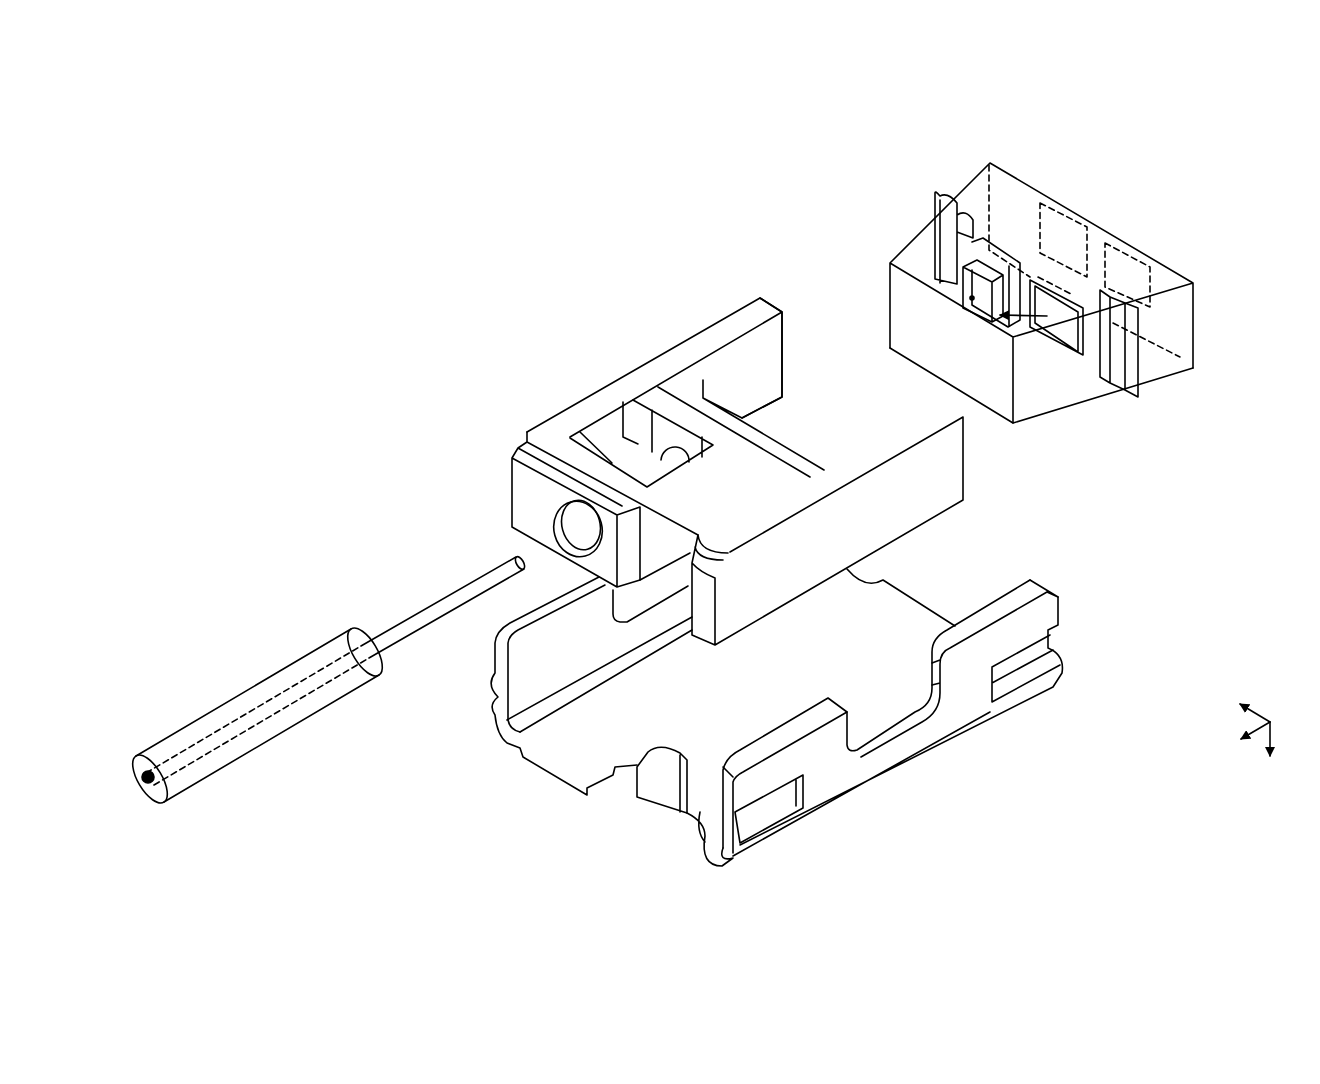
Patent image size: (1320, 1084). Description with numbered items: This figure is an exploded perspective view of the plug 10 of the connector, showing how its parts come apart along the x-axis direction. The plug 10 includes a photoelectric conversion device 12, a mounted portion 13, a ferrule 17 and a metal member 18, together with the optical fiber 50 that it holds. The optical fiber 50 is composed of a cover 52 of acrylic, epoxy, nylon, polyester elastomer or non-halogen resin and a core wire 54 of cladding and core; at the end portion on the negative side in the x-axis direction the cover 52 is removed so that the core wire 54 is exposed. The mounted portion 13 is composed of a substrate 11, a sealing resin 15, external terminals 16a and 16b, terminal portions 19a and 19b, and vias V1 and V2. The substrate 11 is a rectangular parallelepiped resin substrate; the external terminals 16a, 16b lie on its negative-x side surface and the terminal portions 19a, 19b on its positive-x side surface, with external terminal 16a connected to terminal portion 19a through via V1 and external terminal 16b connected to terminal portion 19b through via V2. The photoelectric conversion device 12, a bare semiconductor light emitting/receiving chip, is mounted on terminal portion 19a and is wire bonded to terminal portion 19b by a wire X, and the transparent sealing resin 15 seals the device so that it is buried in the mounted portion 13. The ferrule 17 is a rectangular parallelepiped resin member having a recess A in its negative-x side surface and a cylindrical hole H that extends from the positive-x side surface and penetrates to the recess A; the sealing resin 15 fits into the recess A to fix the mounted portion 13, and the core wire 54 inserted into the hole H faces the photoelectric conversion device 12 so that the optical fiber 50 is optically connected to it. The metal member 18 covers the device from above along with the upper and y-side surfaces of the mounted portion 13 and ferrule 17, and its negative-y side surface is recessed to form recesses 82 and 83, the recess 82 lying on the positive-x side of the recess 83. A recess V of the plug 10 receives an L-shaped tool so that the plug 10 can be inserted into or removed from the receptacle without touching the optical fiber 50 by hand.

The plug 10 is at (306, 179).
The mounted portion 13 is at (912, 152).
The substrate 11 is at (1155, 388).
The photoelectric conversion device 12 is at (960, 280).
The sealing resin 15 is at (1057, 393).
The external terminal 16a is at (1060, 218).
The external terminal 16b is at (1140, 263).
The terminal portion 19a is at (986, 262).
The terminal portion 19b is at (1068, 350).
The via V1 is at (1064, 242).
The via V2 is at (1120, 285).
The wire X is at (1005, 318).
The ferrule 17 is at (670, 360).
The recess A is at (744, 350).
The hole H is at (570, 523).
The metal member 18 is at (863, 768).
The recess 82 is at (737, 823).
The recess 83 is at (1040, 647).
The recess V is at (885, 713).
The optical fiber 50 is at (231, 641).
The cover 52 is at (233, 748).
The core wire 54 is at (148, 787).